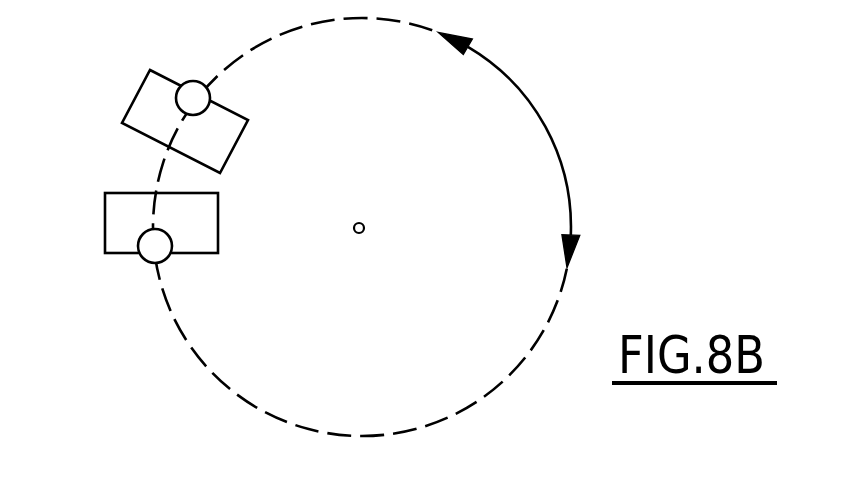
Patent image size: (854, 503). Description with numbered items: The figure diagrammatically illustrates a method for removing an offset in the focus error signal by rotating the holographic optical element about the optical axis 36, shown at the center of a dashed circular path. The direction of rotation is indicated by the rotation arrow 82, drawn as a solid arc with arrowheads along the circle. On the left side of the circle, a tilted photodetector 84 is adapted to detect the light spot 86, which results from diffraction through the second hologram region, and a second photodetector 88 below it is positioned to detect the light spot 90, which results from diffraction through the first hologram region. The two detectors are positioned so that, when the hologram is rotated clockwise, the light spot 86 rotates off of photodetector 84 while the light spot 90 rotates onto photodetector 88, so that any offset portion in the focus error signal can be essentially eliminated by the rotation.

The optical axis 36 is at (364, 223).
The rotation arrow 82 is at (547, 132).
The photodetector 84 is at (138, 93).
The light spot 86 is at (197, 81).
The photodetector 88 is at (105, 215).
The light spot 90 is at (148, 263).